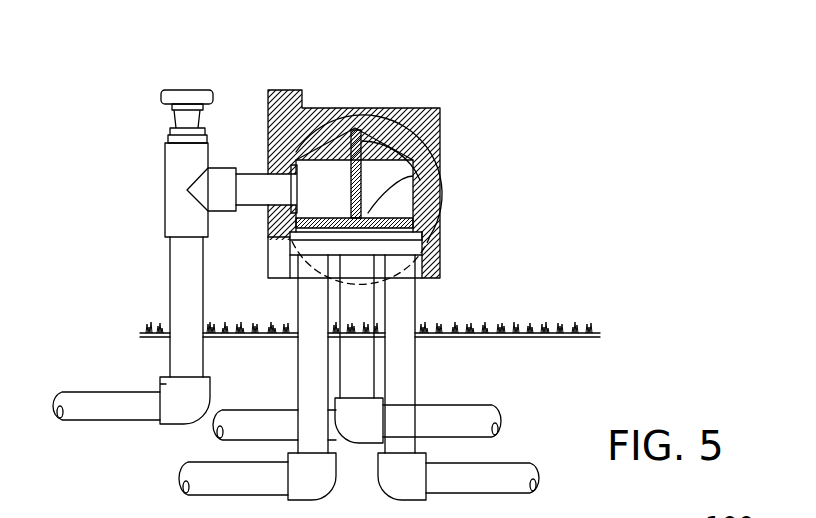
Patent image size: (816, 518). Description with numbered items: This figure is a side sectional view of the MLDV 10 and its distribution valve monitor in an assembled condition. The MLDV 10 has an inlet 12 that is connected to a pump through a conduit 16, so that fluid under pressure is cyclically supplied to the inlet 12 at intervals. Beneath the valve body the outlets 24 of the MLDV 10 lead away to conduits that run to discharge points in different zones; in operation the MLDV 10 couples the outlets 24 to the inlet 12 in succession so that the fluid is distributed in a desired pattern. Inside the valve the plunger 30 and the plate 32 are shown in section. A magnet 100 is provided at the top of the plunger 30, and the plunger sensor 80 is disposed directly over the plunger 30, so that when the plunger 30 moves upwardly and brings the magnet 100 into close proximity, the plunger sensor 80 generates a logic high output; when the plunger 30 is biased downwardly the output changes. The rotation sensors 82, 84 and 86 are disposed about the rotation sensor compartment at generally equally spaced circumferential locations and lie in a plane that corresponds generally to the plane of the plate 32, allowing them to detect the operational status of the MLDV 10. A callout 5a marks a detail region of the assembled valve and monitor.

The MLDV 10 is at (283, 90).
The plunger sensor 80 is at (354, 128).
The magnet 100 is at (418, 135).
The plunger 30 is at (416, 156).
The plate 32 is at (413, 176).
The rotation sensor 84 is at (358, 228).
The rotation sensor 82 is at (267, 237).
The rotation sensor 86 is at (430, 227).
The detail view reference 5a is at (437, 236).
The inlet 12 is at (250, 193).
The conduit 16 is at (180, 258).
The outlets 24 is at (308, 357).